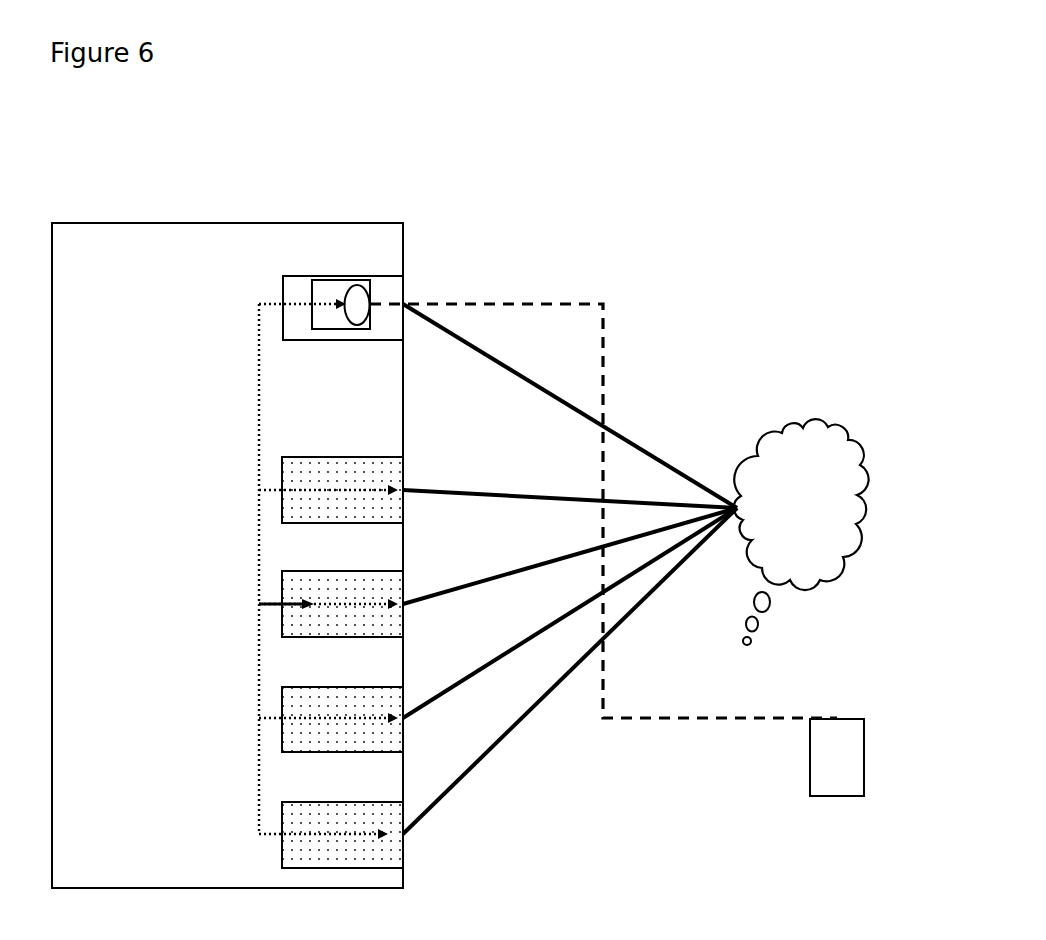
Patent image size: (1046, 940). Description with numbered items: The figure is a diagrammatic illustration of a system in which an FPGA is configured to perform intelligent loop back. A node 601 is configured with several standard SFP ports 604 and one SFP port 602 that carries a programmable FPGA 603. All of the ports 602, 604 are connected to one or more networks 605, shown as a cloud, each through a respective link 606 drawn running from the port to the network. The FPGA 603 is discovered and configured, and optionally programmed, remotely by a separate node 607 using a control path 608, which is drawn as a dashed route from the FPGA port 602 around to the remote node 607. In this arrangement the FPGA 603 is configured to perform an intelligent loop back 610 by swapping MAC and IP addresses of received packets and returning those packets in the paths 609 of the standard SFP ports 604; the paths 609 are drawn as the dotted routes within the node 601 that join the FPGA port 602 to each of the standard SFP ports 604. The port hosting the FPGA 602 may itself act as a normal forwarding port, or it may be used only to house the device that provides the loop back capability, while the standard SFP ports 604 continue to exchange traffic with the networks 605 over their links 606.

The node 601 is at (227, 484).
The SFP port with programmable FPGA 602 is at (343, 210).
The programmable FPGA 603 is at (358, 224).
The standard SFP ports 604 is at (374, 632).
The networks 605 is at (801, 466).
The link 606 is at (570, 569).
The node 607 is at (823, 819).
The control path 608 is at (603, 475).
The paths 609 is at (253, 569).
The intelligent loop back 610 is at (401, 279).